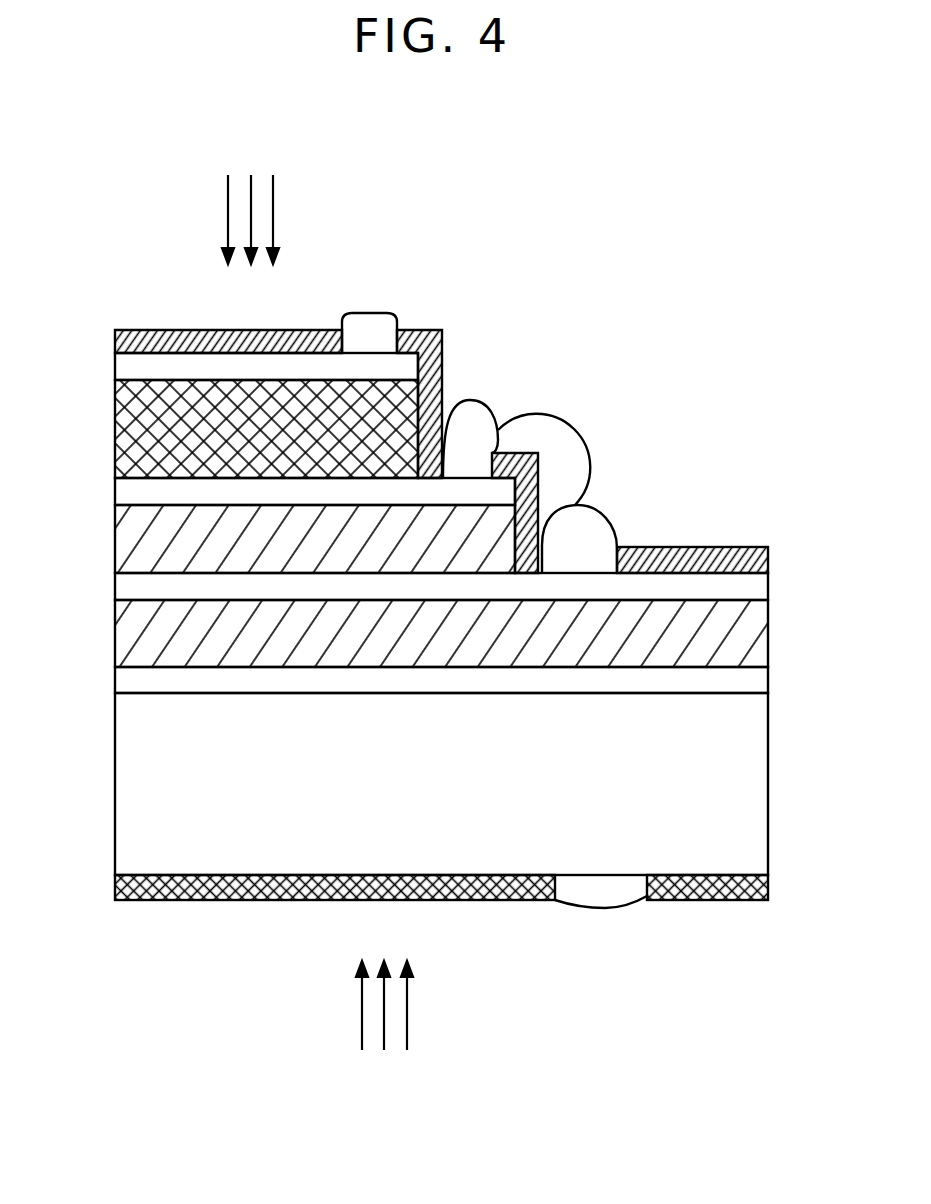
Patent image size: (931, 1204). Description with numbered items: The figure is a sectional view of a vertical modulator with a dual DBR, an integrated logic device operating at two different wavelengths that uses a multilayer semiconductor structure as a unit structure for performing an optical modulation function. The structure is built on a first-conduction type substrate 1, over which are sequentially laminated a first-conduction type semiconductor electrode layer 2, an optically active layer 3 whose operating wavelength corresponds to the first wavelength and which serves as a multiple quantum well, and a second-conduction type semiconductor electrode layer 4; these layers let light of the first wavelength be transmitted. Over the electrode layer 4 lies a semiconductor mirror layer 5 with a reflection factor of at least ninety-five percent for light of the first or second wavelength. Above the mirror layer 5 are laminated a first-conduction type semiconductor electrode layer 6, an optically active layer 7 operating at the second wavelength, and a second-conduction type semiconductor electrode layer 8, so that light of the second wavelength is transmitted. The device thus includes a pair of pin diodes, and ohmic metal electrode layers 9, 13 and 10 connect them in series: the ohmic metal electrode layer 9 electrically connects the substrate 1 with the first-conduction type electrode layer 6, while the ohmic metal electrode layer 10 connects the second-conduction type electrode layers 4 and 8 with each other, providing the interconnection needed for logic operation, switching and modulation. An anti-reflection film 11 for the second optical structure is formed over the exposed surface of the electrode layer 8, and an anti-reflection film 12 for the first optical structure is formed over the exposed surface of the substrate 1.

The first-conduction type substrate 1 is at (127, 779).
The first-conduction type semiconductor electrode layer 2 is at (128, 679).
The optically active layer 3 is at (128, 629).
The second-conduction type semiconductor electrode layer 4 is at (128, 589).
The semiconductor mirror layer 5 is at (128, 539).
The first-conduction type semiconductor electrode layer 6 is at (128, 492).
The optically active layer 7 is at (127, 432).
The second-conduction type semiconductor electrode layer 8 is at (127, 371).
The ohmic metal electrode layer 9 is at (369, 323).
The ohmic metal electrode layer 10 is at (597, 532).
The anti-reflection film 11 is at (126, 342).
The anti-reflection film 12 is at (128, 888).
The ohmic metal electrode layer 13 is at (568, 436).